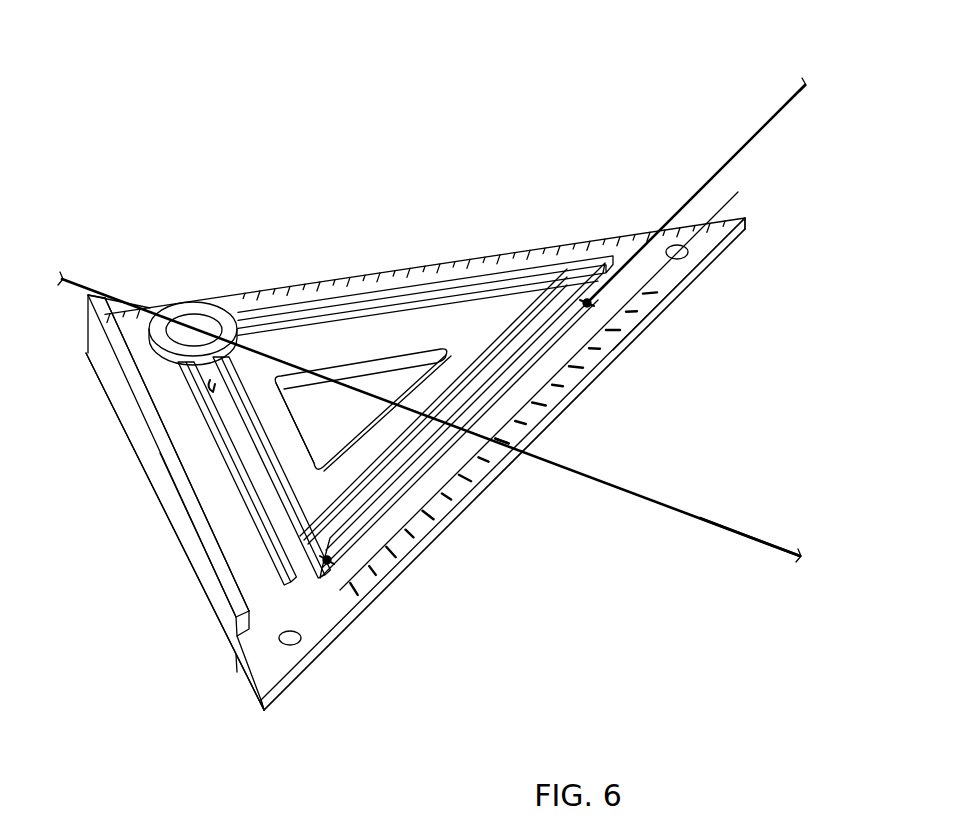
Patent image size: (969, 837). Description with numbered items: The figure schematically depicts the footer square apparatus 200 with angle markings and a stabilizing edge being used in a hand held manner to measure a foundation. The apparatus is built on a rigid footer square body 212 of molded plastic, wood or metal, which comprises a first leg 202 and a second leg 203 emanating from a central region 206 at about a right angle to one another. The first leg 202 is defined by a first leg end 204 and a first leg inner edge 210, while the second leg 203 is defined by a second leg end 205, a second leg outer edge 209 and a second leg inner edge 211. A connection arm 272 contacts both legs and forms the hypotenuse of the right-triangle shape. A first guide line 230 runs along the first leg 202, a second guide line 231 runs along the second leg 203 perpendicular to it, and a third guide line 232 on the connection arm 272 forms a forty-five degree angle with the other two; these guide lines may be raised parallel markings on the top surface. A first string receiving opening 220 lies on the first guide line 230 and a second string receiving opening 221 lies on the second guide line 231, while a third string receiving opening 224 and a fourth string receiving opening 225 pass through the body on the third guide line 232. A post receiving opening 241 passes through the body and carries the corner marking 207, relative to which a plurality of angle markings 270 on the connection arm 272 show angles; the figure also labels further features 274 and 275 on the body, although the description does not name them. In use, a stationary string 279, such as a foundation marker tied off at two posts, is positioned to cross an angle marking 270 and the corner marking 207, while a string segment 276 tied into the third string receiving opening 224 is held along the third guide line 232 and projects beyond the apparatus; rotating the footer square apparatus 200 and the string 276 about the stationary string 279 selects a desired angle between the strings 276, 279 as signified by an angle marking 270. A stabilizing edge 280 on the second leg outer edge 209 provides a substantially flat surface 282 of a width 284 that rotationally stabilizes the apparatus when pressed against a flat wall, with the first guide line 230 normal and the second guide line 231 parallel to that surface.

The footer square apparatus 200 is at (470, 84).
The first leg 202 is at (373, 248).
The second leg 203 is at (196, 608).
The first leg end 204 is at (746, 218).
The second leg end 205 is at (259, 705).
The central region 206 is at (92, 279).
The corner marking 207 is at (89, 296).
The second leg outer edge 209 is at (158, 481).
The first leg inner edge 210 is at (433, 351).
The second leg inner edge 211 is at (319, 462).
The footer square body 212 is at (688, 331).
The first string receiving opening 220 is at (256, 326).
The second string receiving opening 221 is at (219, 388).
The third string receiving opening 224 is at (327, 546).
The fourth string receiving opening 225 is at (589, 301).
The first guide line 230 is at (514, 252).
The second guide line 231 is at (291, 450).
The third guide line 232 is at (383, 500).
The post receiving opening 241 is at (164, 354).
The angle marking 270 is at (609, 349).
The connection arm 272 is at (432, 552).
The marking 274 is at (526, 490).
The slot 275 is at (418, 377).
The string segment 276 is at (737, 152).
The stationary string 279 is at (745, 532).
The stabilizing edge 280 is at (118, 432).
The substantially flat surface 282 is at (190, 551).
The width 284 is at (195, 516).